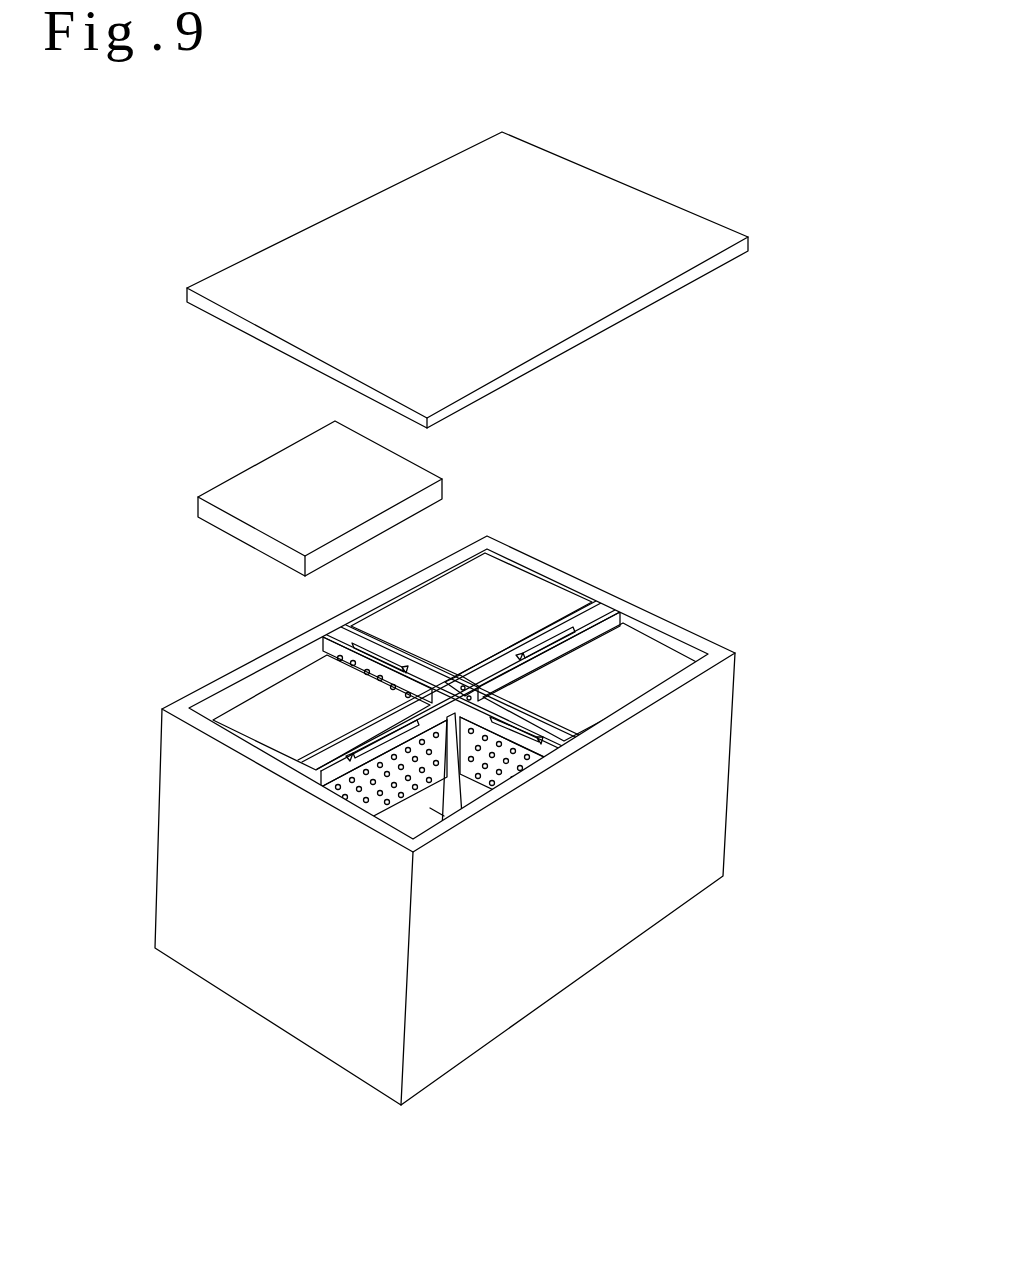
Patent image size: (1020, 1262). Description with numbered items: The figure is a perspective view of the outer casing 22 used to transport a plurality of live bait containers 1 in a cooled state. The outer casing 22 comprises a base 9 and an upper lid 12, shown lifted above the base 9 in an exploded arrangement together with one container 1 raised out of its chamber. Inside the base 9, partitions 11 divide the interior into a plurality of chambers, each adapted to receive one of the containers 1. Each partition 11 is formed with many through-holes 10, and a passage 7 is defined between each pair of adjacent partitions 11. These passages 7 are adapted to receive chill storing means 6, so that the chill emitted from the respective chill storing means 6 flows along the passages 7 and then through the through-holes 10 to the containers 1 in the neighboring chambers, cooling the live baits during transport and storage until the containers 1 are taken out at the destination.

The container 1 is at (431, 498).
The chill storing means 6 is at (351, 637).
The passage 7 is at (442, 710).
The base 9 is at (728, 830).
The through-hole 10 is at (362, 792).
The partition 11 is at (462, 772).
The upper lid 12 is at (683, 283).
The outer casing 22 is at (803, 573).